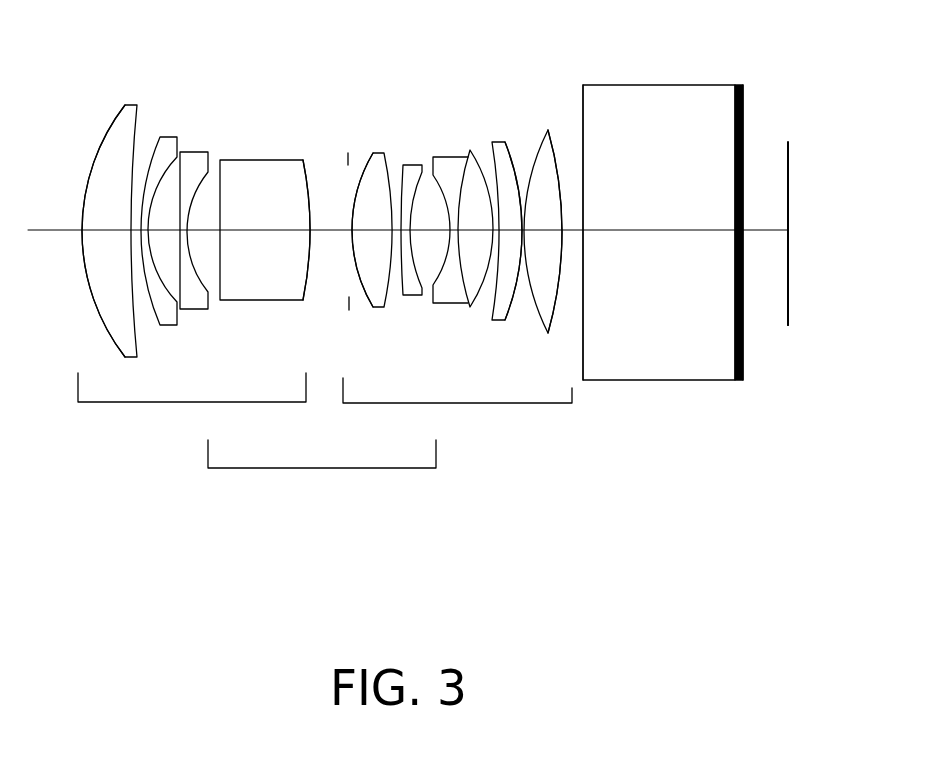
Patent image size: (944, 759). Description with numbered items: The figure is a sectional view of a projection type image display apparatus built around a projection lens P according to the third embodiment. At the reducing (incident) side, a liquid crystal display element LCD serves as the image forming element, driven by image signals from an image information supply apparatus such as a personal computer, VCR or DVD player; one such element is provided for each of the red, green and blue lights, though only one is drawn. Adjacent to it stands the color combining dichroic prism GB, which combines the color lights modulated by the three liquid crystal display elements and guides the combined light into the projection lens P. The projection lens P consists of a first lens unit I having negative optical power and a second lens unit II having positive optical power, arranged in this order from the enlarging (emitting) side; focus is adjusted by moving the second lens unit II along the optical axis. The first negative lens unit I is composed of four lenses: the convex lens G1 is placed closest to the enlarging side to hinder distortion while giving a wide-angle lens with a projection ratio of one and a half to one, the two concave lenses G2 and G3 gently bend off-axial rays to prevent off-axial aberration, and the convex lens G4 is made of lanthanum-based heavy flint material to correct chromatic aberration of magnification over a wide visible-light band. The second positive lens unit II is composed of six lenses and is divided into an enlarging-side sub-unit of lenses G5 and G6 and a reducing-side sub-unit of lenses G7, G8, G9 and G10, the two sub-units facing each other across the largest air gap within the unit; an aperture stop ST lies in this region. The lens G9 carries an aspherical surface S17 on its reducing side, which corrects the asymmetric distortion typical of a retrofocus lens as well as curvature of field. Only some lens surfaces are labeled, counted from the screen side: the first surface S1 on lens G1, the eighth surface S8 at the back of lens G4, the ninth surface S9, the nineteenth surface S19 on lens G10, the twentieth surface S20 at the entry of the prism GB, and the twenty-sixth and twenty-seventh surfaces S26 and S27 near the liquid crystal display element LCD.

The convex lens G1 is at (128, 103).
The concave lens G2 is at (167, 136).
The concave lens G3 is at (203, 153).
The convex lens G4 is at (258, 167).
The lens G5 is at (378, 307).
The lens G6 is at (410, 297).
The lens G7 is at (446, 305).
The lens G8 is at (476, 307).
The aspherical lens G9 is at (507, 300).
The lens G10 is at (547, 334).
The first lens surface S1 is at (96, 143).
The eighth lens surface S8 is at (308, 183).
The ninth lens surface S9 is at (358, 177).
The seventeenth lens surface S17 is at (508, 147).
The nineteenth lens surface S19 is at (558, 163).
The twentieth lens surface S20 is at (583, 127).
The twenty-sixth surface S26 is at (745, 132).
The twenty-seventh surface S27 is at (788, 307).
The aperture stop ST is at (348, 162).
The color combining dichroic prism GB is at (654, 97).
The liquid crystal display element LCD is at (788, 173).
The first lens unit I is at (192, 404).
The second lens unit II is at (457, 407).
The projection lens P is at (322, 470).